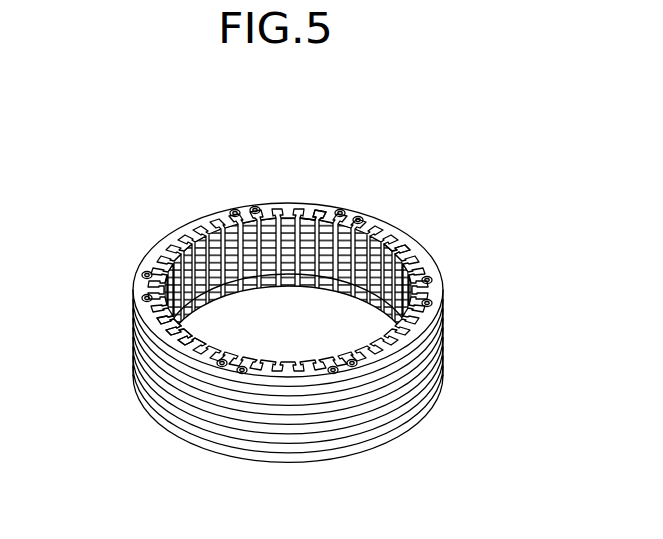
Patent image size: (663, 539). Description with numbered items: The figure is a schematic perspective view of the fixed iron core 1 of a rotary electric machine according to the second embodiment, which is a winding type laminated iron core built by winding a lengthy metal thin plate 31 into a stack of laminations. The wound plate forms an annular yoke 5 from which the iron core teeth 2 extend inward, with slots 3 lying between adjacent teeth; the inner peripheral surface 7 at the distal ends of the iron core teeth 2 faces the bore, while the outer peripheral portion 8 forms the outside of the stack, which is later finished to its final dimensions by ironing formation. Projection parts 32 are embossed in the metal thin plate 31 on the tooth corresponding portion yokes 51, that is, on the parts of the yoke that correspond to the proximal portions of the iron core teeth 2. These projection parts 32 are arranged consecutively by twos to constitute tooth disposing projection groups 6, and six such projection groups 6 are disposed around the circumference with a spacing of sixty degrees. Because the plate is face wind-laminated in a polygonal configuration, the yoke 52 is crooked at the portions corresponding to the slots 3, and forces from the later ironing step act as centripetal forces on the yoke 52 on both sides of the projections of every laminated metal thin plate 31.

The fixed iron core 1 is at (448, 349).
The iron core tooth 2 is at (183, 330).
The slot 3 is at (163, 315).
The yoke 5 is at (393, 240).
The tooth disposing projection group 6 is at (250, 200).
The inner peripheral surface 7 is at (310, 222).
The outer peripheral portion 8 is at (243, 410).
The lengthy metal thin plate 31 is at (390, 362).
The projection part 32 is at (143, 274).
The tooth corresponding portion yoke 51 is at (182, 342).
The yoke 52 is at (163, 325).